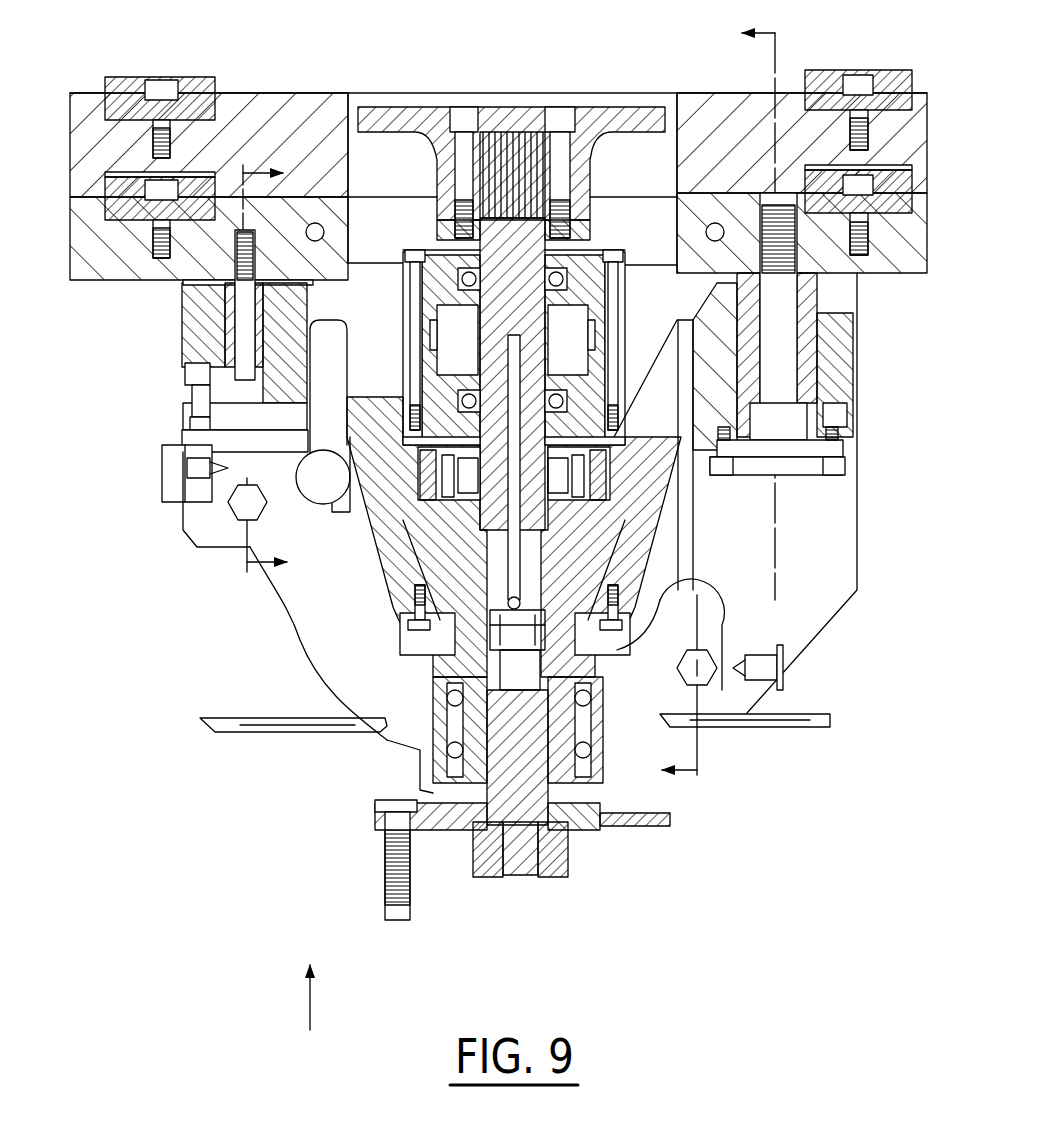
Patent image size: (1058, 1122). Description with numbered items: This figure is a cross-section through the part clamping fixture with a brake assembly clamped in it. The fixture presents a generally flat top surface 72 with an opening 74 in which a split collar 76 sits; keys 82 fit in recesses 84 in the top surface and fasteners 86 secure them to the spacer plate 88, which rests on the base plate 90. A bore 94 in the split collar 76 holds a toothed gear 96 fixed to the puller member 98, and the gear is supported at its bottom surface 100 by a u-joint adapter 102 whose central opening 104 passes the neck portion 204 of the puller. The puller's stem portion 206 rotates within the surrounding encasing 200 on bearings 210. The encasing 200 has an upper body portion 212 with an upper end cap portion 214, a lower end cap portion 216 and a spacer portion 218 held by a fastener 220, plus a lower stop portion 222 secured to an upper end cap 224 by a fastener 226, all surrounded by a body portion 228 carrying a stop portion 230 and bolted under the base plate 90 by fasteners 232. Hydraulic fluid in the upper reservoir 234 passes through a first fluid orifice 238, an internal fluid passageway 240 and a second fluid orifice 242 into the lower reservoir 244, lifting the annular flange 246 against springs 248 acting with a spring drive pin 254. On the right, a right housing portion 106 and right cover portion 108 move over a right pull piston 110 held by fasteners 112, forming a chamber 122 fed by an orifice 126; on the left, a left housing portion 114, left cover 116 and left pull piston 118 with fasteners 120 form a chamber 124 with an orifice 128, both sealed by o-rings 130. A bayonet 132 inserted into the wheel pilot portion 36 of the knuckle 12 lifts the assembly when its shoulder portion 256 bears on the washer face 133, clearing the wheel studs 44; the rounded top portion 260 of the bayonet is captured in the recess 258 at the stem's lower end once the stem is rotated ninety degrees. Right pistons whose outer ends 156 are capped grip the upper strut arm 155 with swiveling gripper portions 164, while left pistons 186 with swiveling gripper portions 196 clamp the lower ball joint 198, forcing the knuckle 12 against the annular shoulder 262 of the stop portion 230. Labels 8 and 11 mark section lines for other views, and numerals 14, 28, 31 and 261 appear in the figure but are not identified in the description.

The view direction arrow 8 is at (310, 1000).
The section line 11 is at (297, 160).
The knuckle 12 is at (350, 680).
The base plate 14 is at (430, 808).
The lower bearing housing 28 is at (433, 700).
The lower shaft 31 is at (577, 762).
The wheel pilot portion 36 is at (453, 843).
The wheel studs 44 is at (388, 860).
The generally flat top surface 72 is at (258, 93).
The opening 74 is at (355, 96).
The split collar 76 is at (605, 110).
The keys 82 is at (825, 82).
The recesses 84 is at (900, 84).
The fasteners 86 is at (858, 84).
The spacer plate 88 is at (752, 100).
The base plate 90 is at (105, 266).
The bore 94 is at (492, 108).
The toothed gear 96 is at (532, 120).
The puller member 98 is at (485, 240).
The bottom surface 100 is at (540, 215).
The u-joint adapter 102 is at (548, 230).
The central opening 104 is at (568, 233).
The right housing portion 106 is at (853, 558).
The right cover portion 108 is at (843, 465).
The right pull piston 110 is at (817, 330).
The fasteners 112 is at (817, 367).
The left housing portion 114 is at (187, 405).
The left cover 116 is at (187, 420).
The left pull piston 118 is at (185, 393).
The fasteners 120 is at (182, 332).
The chamber 122 is at (817, 450).
The chamber 124 is at (244, 405).
The orifice 126 is at (843, 410).
The orifice 128 is at (185, 372).
The o-rings 130 is at (262, 298).
The bayonet 132 is at (430, 740).
The washer face 133 is at (600, 798).
The upper strut arm 155 is at (713, 637).
The outer ends 156 is at (713, 703).
The swiveling gripper portion 164 is at (775, 677).
The piston 186 is at (245, 540).
The swiveling gripper portion 196 is at (240, 513).
The lower ball joint 198 is at (217, 500).
The surrounding encasing 200 is at (350, 503).
The neck portion 204 is at (473, 238).
The stem portion 206 is at (497, 267).
The bearings 210 is at (562, 280).
The upper body portion 212 is at (603, 345).
The upper end cap portion 214 is at (595, 252).
The lower end cap portion 216 is at (600, 425).
The spacer portion 218 is at (603, 383).
The fastener 220 is at (420, 352).
The lower stop portion 222 is at (640, 548).
The upper end cap 224 is at (630, 468).
The fastener 226 is at (337, 530).
The body portion 228 is at (700, 563).
The stop portion 230 is at (703, 604).
The fasteners 232 is at (700, 590).
The upper reservoir 234 is at (425, 330).
The first fluid orifice 238 is at (510, 340).
The internal fluid passageway 240 is at (552, 522).
The second fluid orifice 242 is at (472, 525).
The lower reservoir 244 is at (432, 535).
The annular flange 246 is at (630, 520).
The springs 248 is at (630, 498).
The spring drive pin 254 is at (418, 520).
The shoulder portion 256 is at (460, 853).
The recess 258 is at (443, 660).
The rounded top portion 260 is at (555, 620).
The coupling pin 261 is at (690, 680).
The annular shoulder 262 is at (433, 653).